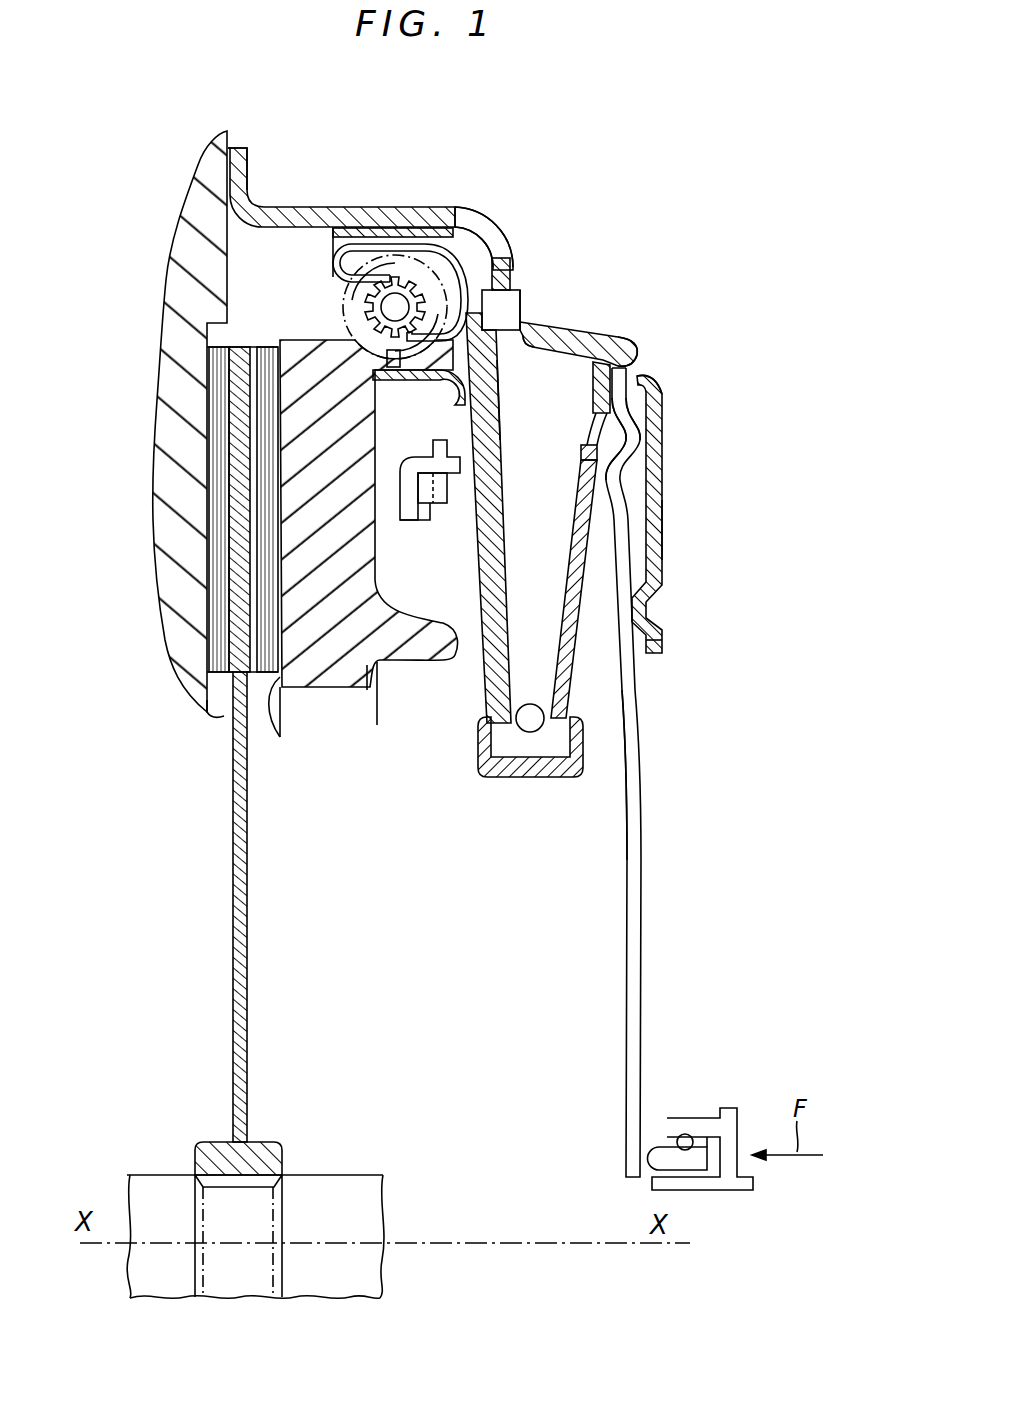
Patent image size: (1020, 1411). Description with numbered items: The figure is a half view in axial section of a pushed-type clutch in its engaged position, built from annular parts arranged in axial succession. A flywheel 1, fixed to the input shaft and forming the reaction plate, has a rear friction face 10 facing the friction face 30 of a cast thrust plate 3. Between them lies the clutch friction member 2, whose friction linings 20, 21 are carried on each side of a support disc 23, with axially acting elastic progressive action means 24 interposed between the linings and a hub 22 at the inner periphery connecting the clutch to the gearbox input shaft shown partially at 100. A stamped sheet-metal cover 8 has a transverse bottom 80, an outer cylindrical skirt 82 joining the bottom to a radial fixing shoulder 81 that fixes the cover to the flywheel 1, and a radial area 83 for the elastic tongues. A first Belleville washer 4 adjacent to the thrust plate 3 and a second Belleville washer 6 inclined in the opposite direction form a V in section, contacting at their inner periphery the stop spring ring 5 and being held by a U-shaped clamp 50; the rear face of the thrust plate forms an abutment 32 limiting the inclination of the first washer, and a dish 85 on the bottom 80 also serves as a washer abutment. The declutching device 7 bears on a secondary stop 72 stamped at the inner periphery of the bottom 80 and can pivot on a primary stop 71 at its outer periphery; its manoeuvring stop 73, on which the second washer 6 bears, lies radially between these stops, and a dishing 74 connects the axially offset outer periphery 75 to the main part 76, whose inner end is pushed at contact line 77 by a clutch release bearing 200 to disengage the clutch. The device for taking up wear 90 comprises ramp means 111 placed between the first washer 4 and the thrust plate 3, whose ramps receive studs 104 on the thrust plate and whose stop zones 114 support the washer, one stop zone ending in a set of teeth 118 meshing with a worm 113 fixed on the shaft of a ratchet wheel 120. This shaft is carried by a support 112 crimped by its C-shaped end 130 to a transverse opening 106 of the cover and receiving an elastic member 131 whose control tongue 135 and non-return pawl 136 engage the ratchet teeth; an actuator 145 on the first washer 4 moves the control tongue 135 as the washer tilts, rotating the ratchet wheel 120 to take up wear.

The flywheel 1 is at (178, 207).
The clutch friction member 2 is at (253, 343).
The thrust plate 3 is at (298, 343).
The first Belleville washer 4 is at (476, 551).
The stop spring ring 5 is at (530, 704).
The second Belleville washer 6 is at (570, 689).
The declutching device 7 is at (641, 890).
The cover 8 is at (671, 380).
The friction face 10 is at (207, 716).
The friction lining 20 is at (215, 378).
The friction lining 21 is at (250, 440).
The hub 22 is at (268, 1142).
The support disc 23 is at (233, 815).
The axially acting elastic progressive action means 24 is at (258, 477).
The friction face 30 is at (270, 715).
The abutment 32 is at (440, 672).
The U-shaped clamp 50 is at (520, 778).
The primary stop 71 is at (637, 377).
The secondary stop 72 is at (620, 592).
The manoeuvring stop 73 is at (588, 455).
The dishing 74 is at (627, 430).
The outer periphery of the declutching device 75 is at (625, 350).
The main part of the declutching device 76 is at (642, 738).
The contact line of the clutch release bearing 77 is at (647, 1160).
The bottom of the cover 80 is at (663, 525).
The fixing means 81 is at (247, 148).
The outer cylindrical skirt 82 is at (566, 333).
The radial area 83 is at (517, 280).
The dish 85 is at (622, 470).
The device for taking up wear 90 is at (325, 262).
The gear box input shaft 100 is at (366, 1175).
The studs 104 is at (417, 517).
The transverse opening 106 is at (526, 348).
The ramp means 111 is at (453, 508).
The support 112 is at (351, 232).
The worm 113 is at (340, 317).
The stop zones 114 is at (499, 410).
The set of teeth 118 is at (425, 362).
The ratchet wheel 120 is at (418, 290).
The C-shaped end 130 is at (522, 305).
The elastic member 131 is at (455, 250).
The control tongue 135 is at (436, 455).
The non-return pawl 136 is at (390, 282).
The actuator 145 is at (520, 300).
The clutch release bearing 200 is at (690, 1118).